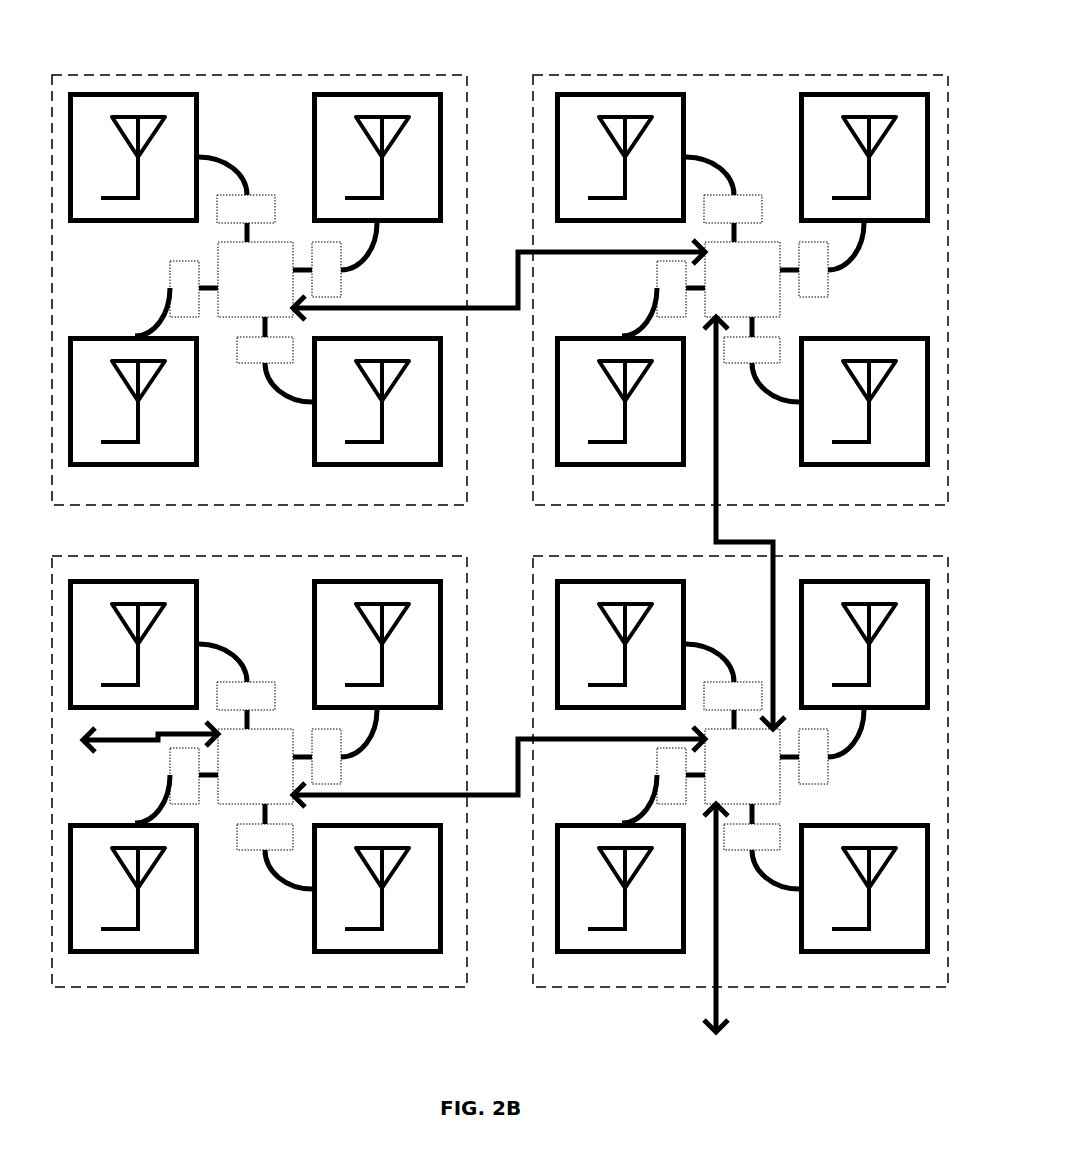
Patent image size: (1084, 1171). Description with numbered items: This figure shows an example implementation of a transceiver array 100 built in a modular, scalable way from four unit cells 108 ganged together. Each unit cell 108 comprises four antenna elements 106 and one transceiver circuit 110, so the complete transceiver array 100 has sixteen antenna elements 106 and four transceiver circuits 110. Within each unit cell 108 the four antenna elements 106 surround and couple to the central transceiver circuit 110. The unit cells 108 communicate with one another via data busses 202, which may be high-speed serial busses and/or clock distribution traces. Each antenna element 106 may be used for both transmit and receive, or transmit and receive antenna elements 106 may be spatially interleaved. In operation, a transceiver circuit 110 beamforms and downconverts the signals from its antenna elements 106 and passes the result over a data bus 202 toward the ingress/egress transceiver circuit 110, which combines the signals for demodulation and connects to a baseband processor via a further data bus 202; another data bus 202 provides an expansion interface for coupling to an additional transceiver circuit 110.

The transceiver array 100 is at (128, 31).
The antenna element 106 is at (199, 135).
The unit cell 108 is at (117, 76).
The transceiver circuit 110 is at (762, 780).
The data bus 202 is at (506, 306).